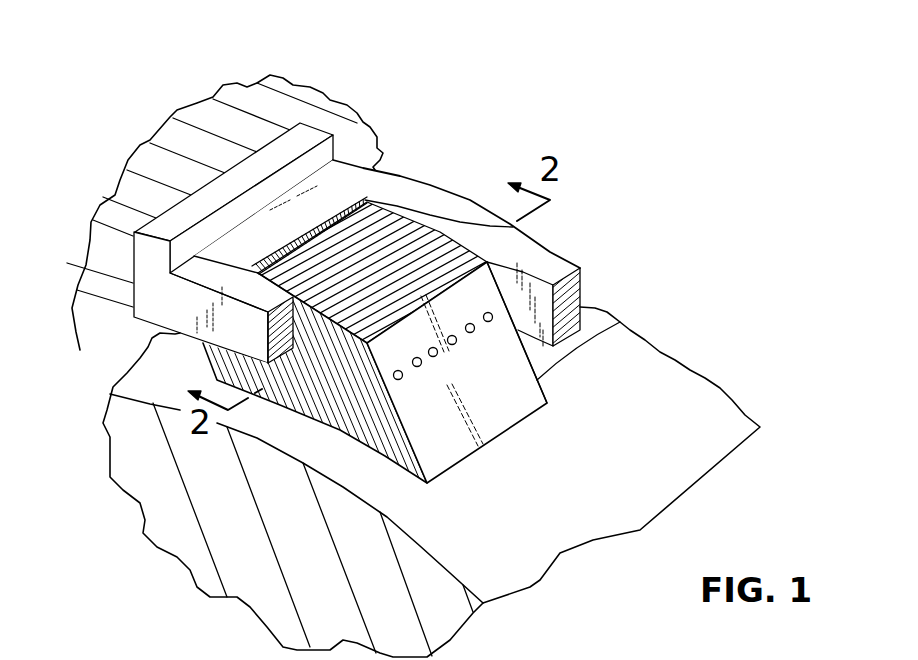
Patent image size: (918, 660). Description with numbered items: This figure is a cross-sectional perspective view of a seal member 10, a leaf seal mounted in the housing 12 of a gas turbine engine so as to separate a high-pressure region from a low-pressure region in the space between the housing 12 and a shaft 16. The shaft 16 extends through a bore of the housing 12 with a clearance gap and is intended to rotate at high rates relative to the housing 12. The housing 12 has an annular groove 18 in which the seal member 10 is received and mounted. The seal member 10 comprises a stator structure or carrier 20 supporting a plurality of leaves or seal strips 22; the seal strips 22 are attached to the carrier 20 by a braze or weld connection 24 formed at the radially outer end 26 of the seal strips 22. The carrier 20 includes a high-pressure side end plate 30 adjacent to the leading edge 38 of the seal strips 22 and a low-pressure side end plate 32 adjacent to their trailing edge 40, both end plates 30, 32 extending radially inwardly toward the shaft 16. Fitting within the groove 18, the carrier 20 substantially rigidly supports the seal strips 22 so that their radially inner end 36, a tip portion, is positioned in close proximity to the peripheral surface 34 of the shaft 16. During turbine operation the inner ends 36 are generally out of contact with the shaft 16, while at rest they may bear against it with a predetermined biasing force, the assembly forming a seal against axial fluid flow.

The seal member 10 is at (428, 185).
The housing 12 is at (360, 114).
The shaft 16 is at (733, 404).
The annular groove 18 is at (238, 167).
The carrier 20 is at (150, 289).
The seal strips 22 is at (630, 327).
The braze or weld connection 24 is at (230, 242).
The radially outer end 26 is at (455, 290).
The high-pressure side end plate 30 is at (173, 310).
The low-pressure side end plate 32 is at (552, 258).
The peripheral surface 34 is at (500, 578).
The radially inner end 36 is at (488, 444).
The leading edge 38 is at (392, 393).
The trailing edge 40 is at (556, 400).